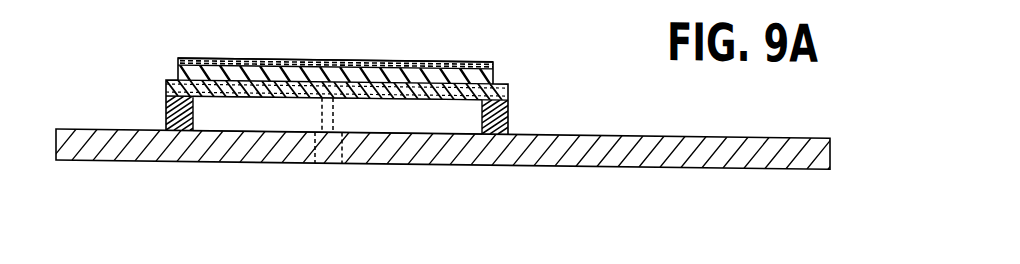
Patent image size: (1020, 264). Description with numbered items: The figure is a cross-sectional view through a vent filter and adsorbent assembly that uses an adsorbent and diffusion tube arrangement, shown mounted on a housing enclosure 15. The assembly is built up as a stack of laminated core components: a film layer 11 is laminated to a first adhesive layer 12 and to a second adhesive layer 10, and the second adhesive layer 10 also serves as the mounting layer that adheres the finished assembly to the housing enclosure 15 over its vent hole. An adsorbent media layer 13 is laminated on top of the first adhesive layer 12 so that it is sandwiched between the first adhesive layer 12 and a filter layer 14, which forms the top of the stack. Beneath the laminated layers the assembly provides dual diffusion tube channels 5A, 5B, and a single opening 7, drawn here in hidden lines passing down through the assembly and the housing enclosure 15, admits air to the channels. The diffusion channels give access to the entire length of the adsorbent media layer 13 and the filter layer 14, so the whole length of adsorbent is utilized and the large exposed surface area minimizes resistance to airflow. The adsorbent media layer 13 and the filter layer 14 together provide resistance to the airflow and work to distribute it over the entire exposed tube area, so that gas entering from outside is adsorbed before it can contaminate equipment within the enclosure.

The diffusion tube channel 5A is at (212, 108).
The diffusion tube channel 5B is at (440, 115).
The single opening 7 is at (328, 126).
The second adhesive layer 10 is at (507, 122).
The film layer 11 is at (507, 104).
The first adhesive layer 12 is at (507, 86).
The adsorbent media layer 13 is at (493, 69).
The filter layer 14 is at (493, 56).
The housing enclosure 15 is at (662, 142).